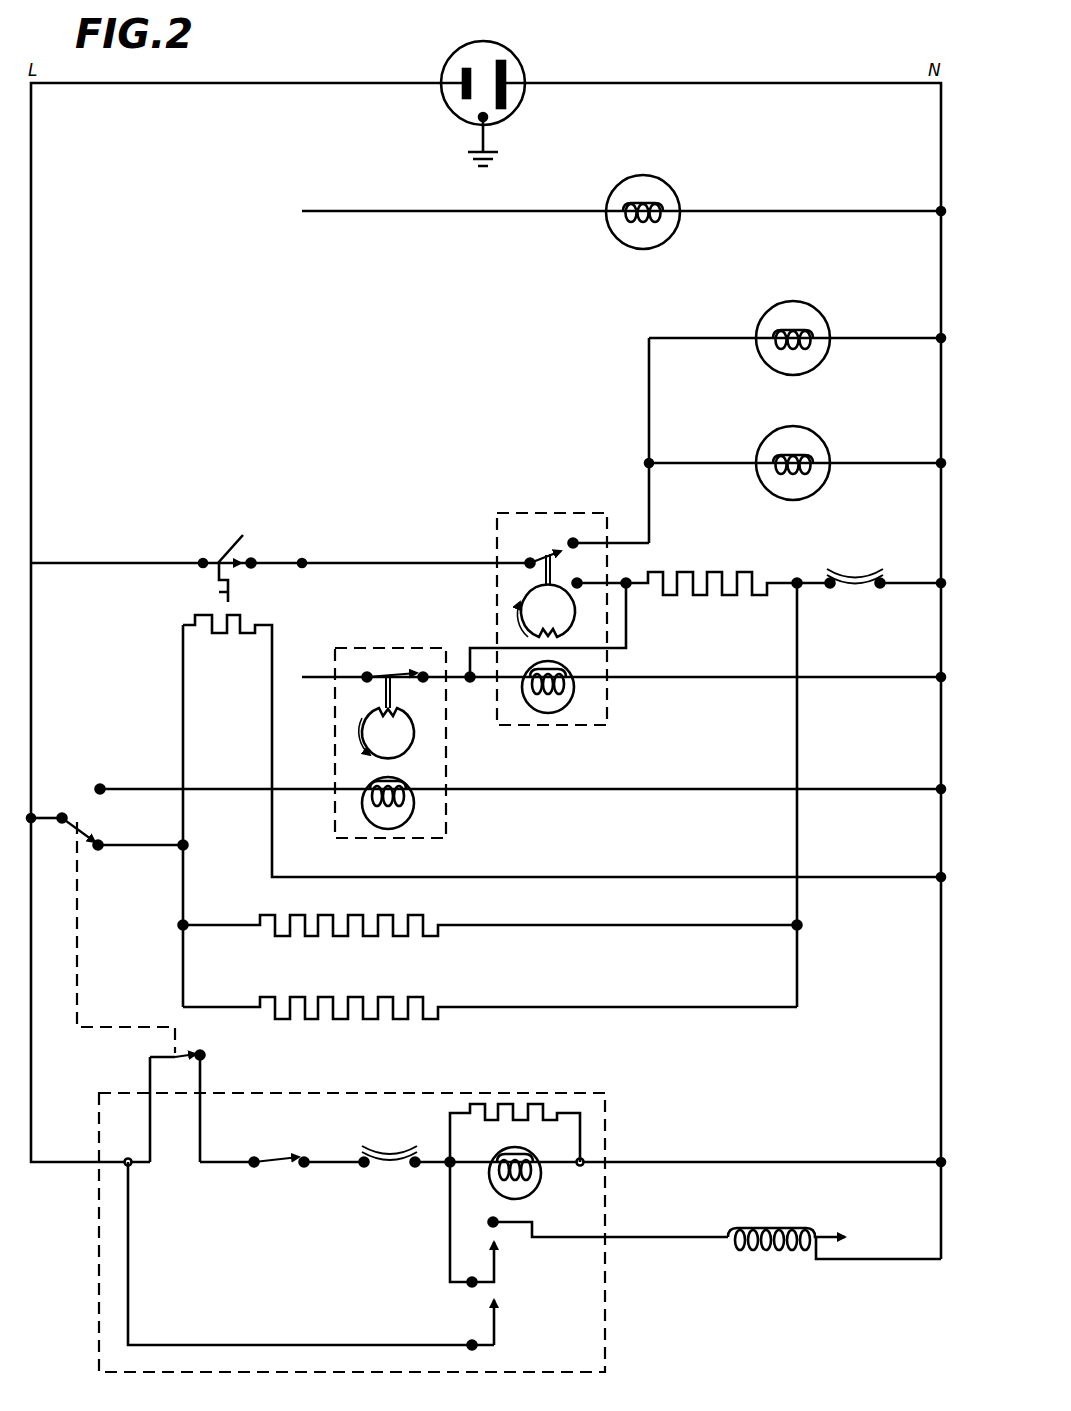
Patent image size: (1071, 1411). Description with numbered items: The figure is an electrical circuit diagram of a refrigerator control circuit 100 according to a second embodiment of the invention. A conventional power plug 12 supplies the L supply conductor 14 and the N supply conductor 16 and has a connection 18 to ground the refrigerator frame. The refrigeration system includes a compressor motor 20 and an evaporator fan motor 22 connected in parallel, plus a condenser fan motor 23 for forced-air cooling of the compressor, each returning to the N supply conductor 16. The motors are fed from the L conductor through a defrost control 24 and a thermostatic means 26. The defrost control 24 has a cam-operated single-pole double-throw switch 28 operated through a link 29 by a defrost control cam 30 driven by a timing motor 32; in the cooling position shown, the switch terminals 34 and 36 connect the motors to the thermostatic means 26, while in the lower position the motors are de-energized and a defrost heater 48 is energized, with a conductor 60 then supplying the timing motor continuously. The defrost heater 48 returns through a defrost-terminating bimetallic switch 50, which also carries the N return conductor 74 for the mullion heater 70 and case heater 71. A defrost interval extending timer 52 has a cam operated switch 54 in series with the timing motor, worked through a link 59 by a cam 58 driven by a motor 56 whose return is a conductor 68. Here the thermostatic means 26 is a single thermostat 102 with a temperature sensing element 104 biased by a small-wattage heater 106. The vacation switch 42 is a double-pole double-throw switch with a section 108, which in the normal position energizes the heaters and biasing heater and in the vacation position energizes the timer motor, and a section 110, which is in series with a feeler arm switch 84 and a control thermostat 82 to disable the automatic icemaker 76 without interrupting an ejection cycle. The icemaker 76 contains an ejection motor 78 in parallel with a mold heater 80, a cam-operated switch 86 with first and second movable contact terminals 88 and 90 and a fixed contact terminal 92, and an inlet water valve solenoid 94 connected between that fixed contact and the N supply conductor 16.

The power plug 12 is at (521, 66).
The L supply conductor 14 is at (31, 172).
The N supply conductor 16 is at (941, 152).
The ground connection 18 is at (483, 133).
The compressor motor 20 is at (825, 322).
The evaporator fan motor 22 is at (825, 448).
The condenser fan motor 23 is at (675, 198).
The defrost control 24 is at (495, 514).
The thermostatic means 26 is at (232, 530).
The defrost control switch 28 is at (542, 552).
The link 29 is at (553, 570).
The defrost control cam 30 is at (524, 598).
The timing motor 32 is at (565, 700).
The switch terminal 34 is at (578, 541).
The switch terminal 36 is at (526, 560).
The vacation switch 42 is at (168, 1016).
The defrost heater 48 is at (692, 597).
The defrost-terminating bimetallic switch 50 is at (856, 578).
The defrost interval extending timer 52 is at (335, 648).
The cam operated switch 54 is at (394, 670).
The motor 56 is at (405, 818).
The cam 58 is at (405, 745).
The link 59 is at (392, 690).
The conductor 60 is at (470, 645).
The conductor 68 is at (580, 788).
The mullion heater 70 is at (280, 937).
The case heater 71 is at (300, 1020).
The N return conductor 74 is at (797, 858).
The automatic icemaker 76 is at (99, 1093).
The ejection motor 78 is at (535, 1192).
The mold heater 80 is at (492, 1120).
The control thermostat 82 is at (390, 1150).
The feeler arm switch 84 is at (260, 1158).
The cam-operated switch 86 is at (528, 1283).
The first movable contact terminal 88 is at (470, 1343).
The second movable contact terminal 90 is at (470, 1284).
The fixed contact terminal 92 is at (490, 1220).
The inlet water valve solenoid 94 is at (780, 1248).
The circuit 100 is at (68, 1242).
The thermostat 102 is at (243, 548).
The temperature sensing element 104 is at (219, 582).
The biasing heater 106 is at (222, 633).
The switch section 108 is at (74, 798).
The switch section 110 is at (192, 1050).